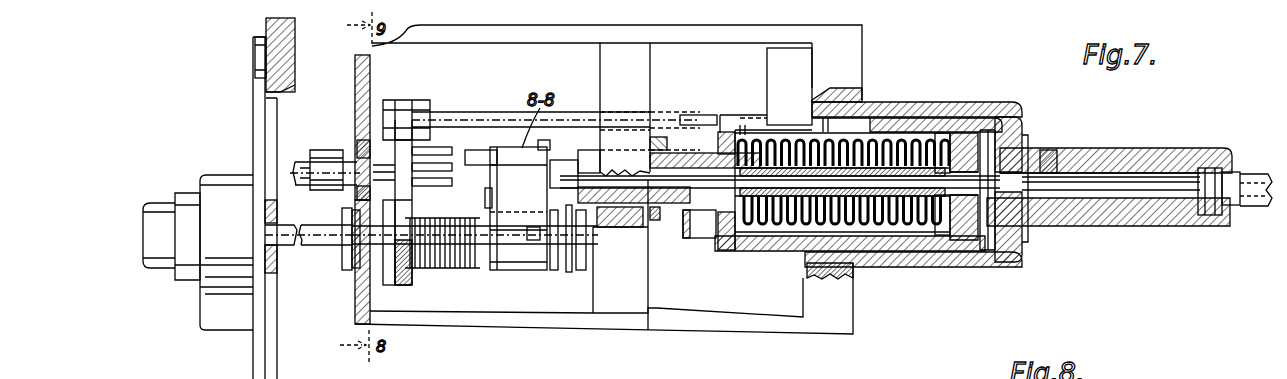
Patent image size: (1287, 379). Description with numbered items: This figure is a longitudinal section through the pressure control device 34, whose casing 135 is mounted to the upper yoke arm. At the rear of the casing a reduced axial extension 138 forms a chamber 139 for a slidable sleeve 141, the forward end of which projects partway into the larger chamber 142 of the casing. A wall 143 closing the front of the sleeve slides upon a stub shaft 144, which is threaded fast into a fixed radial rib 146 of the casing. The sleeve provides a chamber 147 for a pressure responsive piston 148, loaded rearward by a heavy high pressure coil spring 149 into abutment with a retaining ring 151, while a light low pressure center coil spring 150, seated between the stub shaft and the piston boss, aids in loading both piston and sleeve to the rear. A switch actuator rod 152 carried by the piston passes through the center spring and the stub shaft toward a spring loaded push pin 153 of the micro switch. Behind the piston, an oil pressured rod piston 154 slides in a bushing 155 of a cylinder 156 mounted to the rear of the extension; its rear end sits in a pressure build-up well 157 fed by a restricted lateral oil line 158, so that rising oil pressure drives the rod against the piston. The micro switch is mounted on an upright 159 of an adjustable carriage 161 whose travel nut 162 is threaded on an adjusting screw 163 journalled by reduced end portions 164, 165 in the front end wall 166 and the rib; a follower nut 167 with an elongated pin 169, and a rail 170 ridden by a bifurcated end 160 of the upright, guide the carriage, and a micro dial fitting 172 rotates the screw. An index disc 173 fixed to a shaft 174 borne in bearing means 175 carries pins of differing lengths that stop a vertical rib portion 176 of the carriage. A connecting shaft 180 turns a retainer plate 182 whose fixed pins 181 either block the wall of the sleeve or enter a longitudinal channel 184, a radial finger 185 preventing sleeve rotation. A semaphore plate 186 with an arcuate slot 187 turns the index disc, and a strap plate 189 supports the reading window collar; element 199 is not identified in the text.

The pressure control device 34 is at (208, 127).
The casing 135 is at (853, 334).
The reduced axial extension 138 is at (905, 107).
The chamber 139 is at (945, 120).
The slidable sleeve 141 is at (985, 122).
The larger chamber 142 is at (795, 297).
The wall 143 is at (700, 262).
The stub shaft 144 is at (686, 212).
The fixed radial rib 146 is at (662, 318).
The chamber 147 is at (931, 240).
The pressure responsive piston 148 is at (965, 250).
The heavy high pressure coil spring 149 is at (907, 236).
The light low pressure center coil spring 150 is at (773, 236).
The retaining ring 151 is at (1031, 114).
The switch actuator rod 152 is at (815, 180).
The spring loaded push pin 153 is at (603, 160).
The oil pressured rod piston 154 is at (1176, 191).
The bushing 155 is at (1076, 228).
The cylinder 156 is at (1108, 157).
The pressure build-up well 157 is at (1236, 170).
The restricted lateral oil line 158 is at (1262, 186).
The upright 159 is at (553, 150).
The bifurcated end 160 is at (560, 150).
The adjustable carriage 161 is at (509, 296).
The travel nut 162 is at (536, 285).
The adjusting screw 163 is at (470, 214).
The reduced end portion 164 is at (356, 278).
The reduced end portion 165 is at (615, 255).
The front end wall 166 is at (360, 108).
The follower nut 167 is at (568, 280).
The elongated pin 169 is at (528, 240).
The rail 170 is at (482, 152).
The micro dial fitting 172 is at (165, 200).
The index disc 173 is at (400, 290).
The shaft 174 is at (330, 158).
The bearing means 175 is at (403, 140).
The vertical rib portion 176 is at (492, 205).
The connecting shaft 180 is at (462, 113).
The fixed pins 181 is at (693, 118).
The retainer plate 182 is at (652, 292).
The longitudinal channel 184 is at (748, 118).
The radial finger 185 is at (770, 62).
The semaphore plate 186 is at (265, 352).
The arcuate slot 187 is at (283, 232).
The strap plate 189 is at (258, 55).
The motor body 199 is at (198, 305).